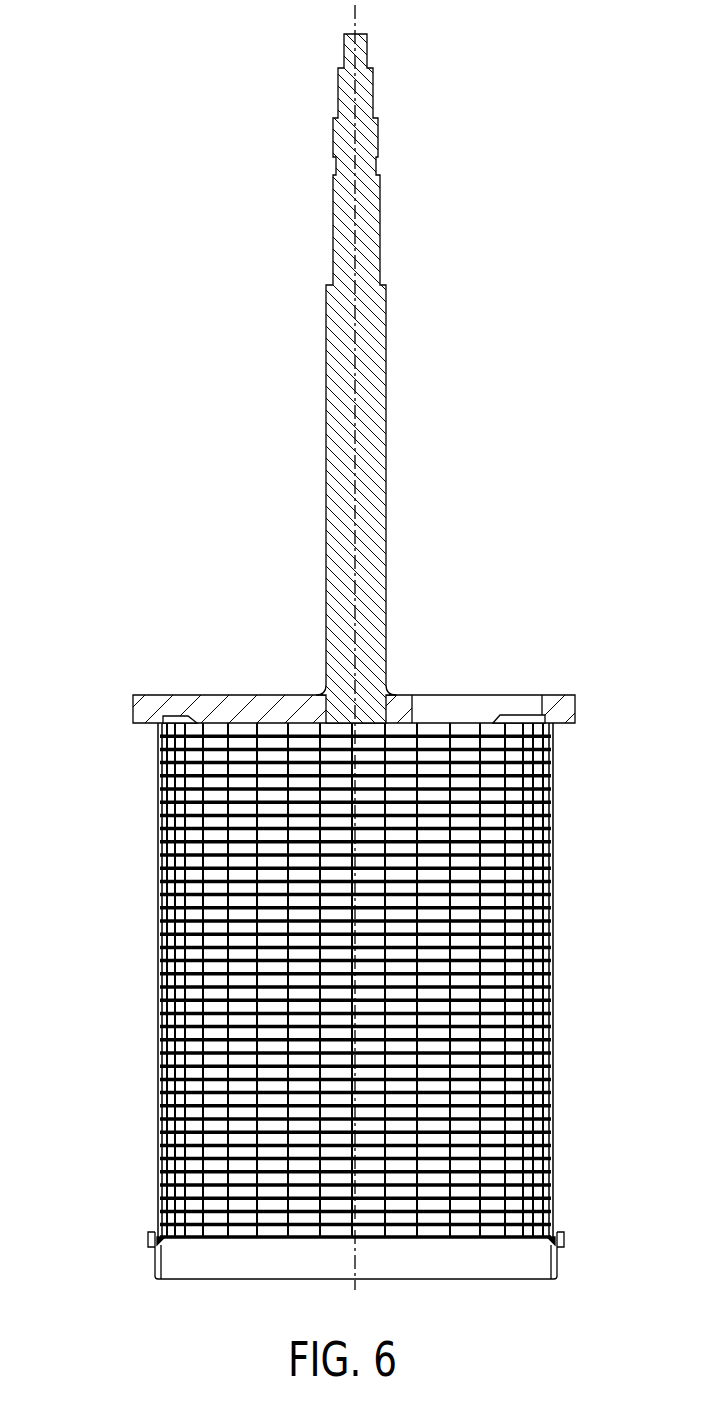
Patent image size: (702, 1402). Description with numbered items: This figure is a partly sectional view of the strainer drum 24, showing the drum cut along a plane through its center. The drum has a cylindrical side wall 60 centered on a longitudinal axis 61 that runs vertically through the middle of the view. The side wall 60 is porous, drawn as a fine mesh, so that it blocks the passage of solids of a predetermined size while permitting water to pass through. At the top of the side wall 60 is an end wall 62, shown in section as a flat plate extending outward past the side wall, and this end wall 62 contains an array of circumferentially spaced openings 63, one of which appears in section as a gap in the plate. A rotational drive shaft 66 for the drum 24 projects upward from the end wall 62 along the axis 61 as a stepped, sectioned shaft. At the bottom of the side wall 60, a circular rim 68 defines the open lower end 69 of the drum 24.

The strainer drum 24 is at (142, 774).
The cylindrical side wall 60 is at (155, 907).
The longitudinal axis 61 is at (357, 255).
The end wall 62 is at (225, 710).
The openings 63 is at (447, 712).
The rotational drive shaft 66 is at (325, 408).
The circular rim 68 is at (157, 1260).
The open lower end 69 is at (257, 1280).